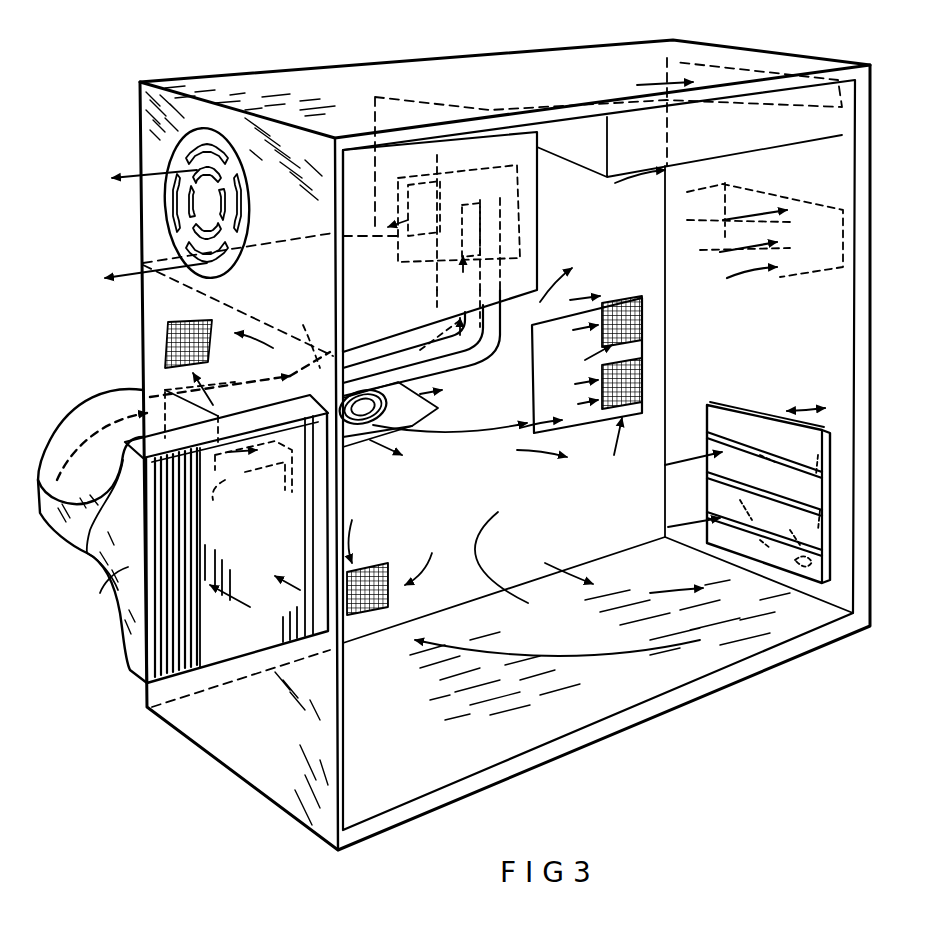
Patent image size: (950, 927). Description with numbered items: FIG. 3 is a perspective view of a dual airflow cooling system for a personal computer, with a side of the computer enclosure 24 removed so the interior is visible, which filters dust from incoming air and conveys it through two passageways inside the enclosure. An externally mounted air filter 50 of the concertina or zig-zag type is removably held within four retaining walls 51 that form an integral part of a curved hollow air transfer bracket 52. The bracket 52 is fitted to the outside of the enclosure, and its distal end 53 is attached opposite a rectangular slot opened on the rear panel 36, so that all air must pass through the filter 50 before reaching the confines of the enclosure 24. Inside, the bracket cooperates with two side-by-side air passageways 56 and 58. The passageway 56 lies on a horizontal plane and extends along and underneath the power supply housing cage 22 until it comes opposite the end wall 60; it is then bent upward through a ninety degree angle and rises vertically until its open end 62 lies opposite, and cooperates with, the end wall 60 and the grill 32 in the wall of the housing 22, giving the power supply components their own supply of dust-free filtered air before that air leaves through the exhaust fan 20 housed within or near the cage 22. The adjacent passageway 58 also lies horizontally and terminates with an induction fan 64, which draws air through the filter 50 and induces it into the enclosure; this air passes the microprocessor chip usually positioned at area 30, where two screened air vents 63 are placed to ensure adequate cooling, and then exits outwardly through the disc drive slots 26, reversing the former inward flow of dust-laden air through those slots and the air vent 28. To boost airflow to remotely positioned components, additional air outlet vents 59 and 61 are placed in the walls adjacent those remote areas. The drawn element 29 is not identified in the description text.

The exhaust fan 20 is at (200, 205).
The power supply cage 22 is at (503, 292).
The computer enclosure 24 is at (452, 54).
The disc slots 26 is at (718, 82).
The air vent 28 is at (717, 435).
The disk drives 29 is at (770, 435).
The microprocessor area 30 is at (580, 374).
The grill 32 is at (474, 172).
The rear panel 36 is at (140, 325).
The air filter 50 is at (270, 529).
The retaining walls 51 is at (103, 545).
The air transfer bracket 52 is at (50, 440).
The distal end 53 is at (160, 392).
The air passageway 56 is at (303, 325).
The air passageway 58 is at (372, 445).
The air outlet vent 59 is at (395, 570).
The end wall 60 is at (537, 232).
The air outlet vent 61 is at (186, 322).
The open end 62 is at (488, 228).
The screened air vents 63 is at (617, 305).
The induction fan 64 is at (372, 440).